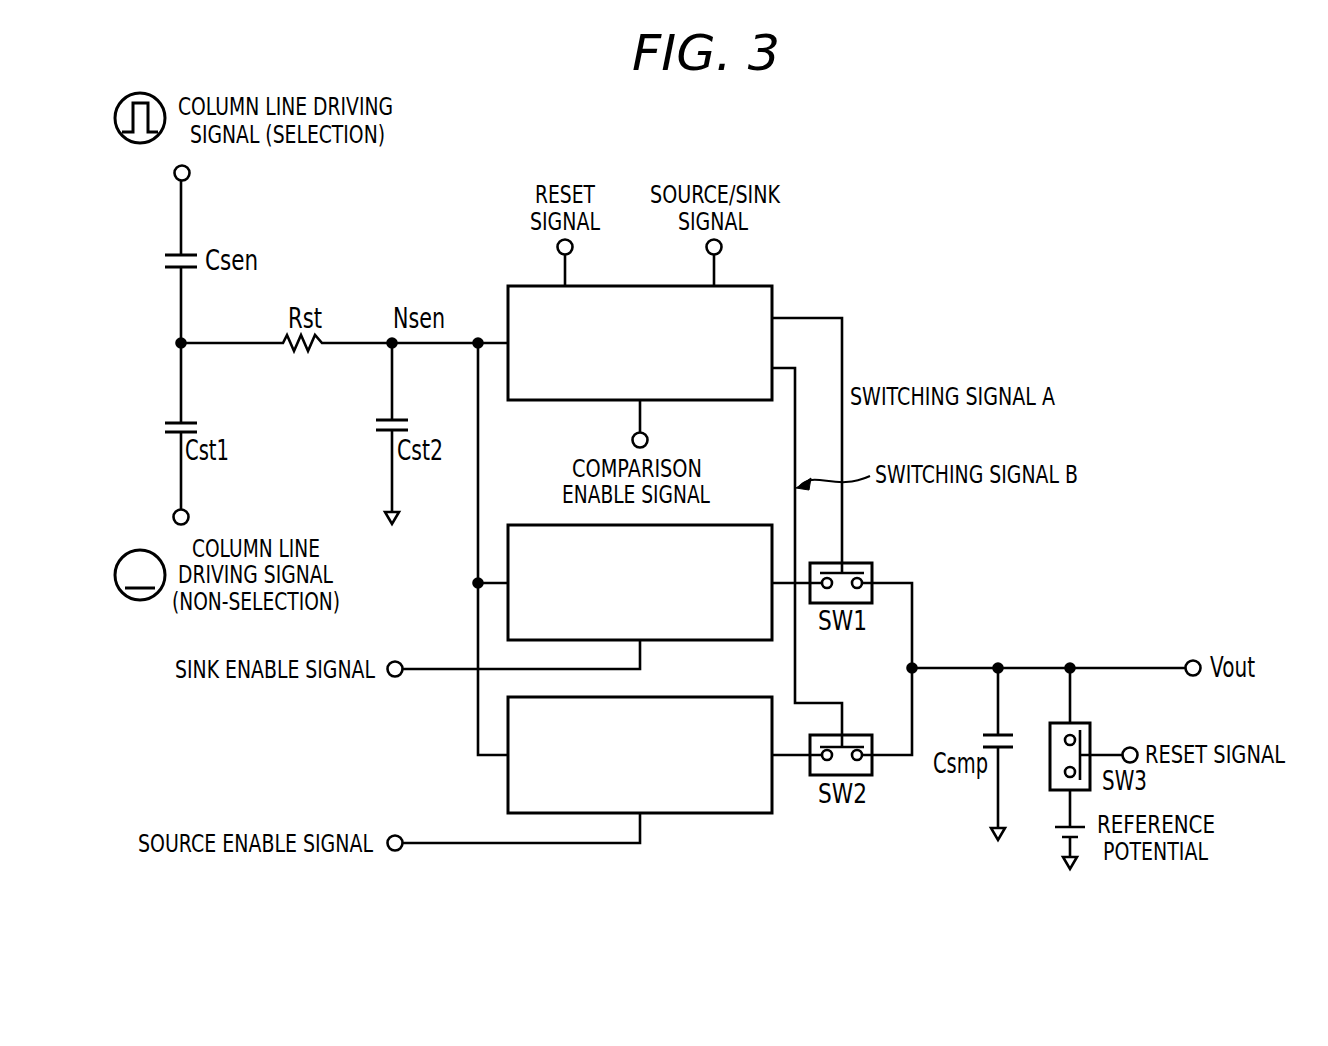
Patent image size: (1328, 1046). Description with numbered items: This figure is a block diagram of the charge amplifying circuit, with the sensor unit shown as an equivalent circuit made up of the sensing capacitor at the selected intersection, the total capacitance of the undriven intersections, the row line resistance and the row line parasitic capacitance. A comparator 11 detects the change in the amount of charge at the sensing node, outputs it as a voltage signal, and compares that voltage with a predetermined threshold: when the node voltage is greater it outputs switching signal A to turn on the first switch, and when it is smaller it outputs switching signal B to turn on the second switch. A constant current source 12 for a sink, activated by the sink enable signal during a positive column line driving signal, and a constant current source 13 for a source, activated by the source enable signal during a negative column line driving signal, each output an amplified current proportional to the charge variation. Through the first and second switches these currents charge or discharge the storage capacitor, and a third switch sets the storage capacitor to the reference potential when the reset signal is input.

The comparator 11 is at (727, 285).
The constant current source for a sink 12 is at (727, 522).
The constant current source for a source 13 is at (727, 693).